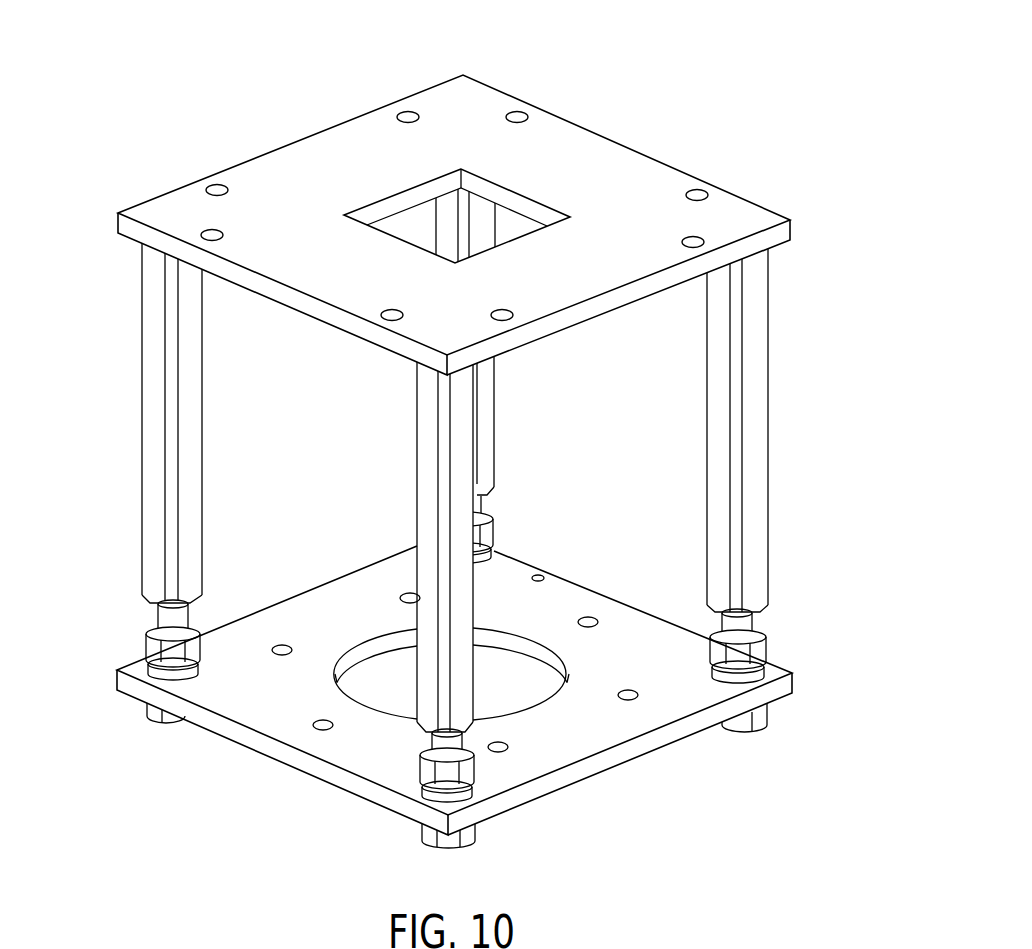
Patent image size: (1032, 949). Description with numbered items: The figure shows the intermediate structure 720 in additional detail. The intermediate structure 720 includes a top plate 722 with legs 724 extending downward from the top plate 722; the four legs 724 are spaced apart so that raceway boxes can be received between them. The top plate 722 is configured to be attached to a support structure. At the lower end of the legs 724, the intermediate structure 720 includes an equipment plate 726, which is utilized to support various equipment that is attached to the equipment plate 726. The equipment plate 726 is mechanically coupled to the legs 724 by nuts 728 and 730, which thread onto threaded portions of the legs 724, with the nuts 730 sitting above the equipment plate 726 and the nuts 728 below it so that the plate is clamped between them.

The intermediate structure 720 is at (456, 436).
The top plate 722 is at (318, 146).
The legs 724 is at (142, 388).
The equipment plate 726 is at (318, 599).
The nuts 728 is at (147, 712).
The nuts 730 is at (147, 645).